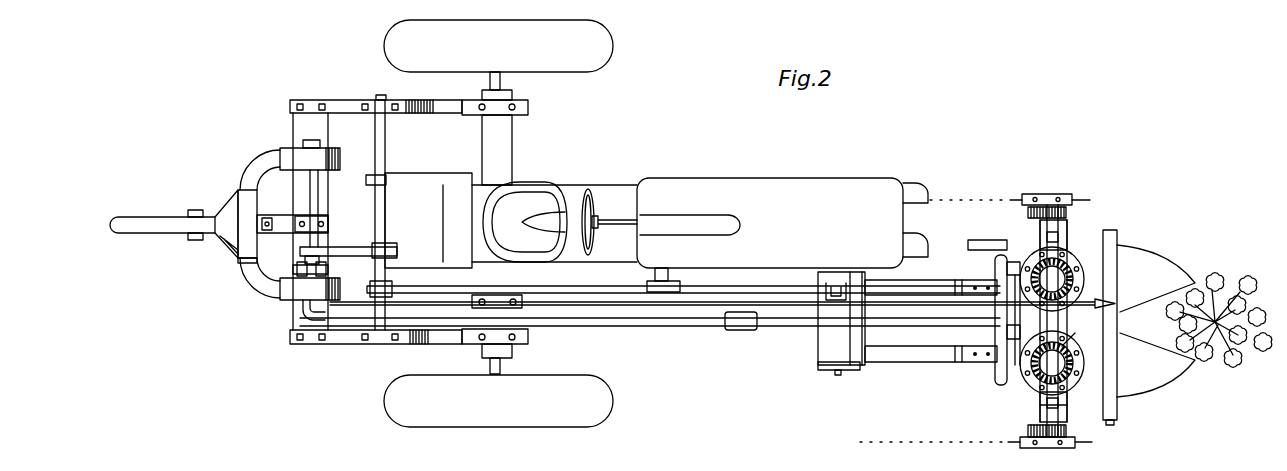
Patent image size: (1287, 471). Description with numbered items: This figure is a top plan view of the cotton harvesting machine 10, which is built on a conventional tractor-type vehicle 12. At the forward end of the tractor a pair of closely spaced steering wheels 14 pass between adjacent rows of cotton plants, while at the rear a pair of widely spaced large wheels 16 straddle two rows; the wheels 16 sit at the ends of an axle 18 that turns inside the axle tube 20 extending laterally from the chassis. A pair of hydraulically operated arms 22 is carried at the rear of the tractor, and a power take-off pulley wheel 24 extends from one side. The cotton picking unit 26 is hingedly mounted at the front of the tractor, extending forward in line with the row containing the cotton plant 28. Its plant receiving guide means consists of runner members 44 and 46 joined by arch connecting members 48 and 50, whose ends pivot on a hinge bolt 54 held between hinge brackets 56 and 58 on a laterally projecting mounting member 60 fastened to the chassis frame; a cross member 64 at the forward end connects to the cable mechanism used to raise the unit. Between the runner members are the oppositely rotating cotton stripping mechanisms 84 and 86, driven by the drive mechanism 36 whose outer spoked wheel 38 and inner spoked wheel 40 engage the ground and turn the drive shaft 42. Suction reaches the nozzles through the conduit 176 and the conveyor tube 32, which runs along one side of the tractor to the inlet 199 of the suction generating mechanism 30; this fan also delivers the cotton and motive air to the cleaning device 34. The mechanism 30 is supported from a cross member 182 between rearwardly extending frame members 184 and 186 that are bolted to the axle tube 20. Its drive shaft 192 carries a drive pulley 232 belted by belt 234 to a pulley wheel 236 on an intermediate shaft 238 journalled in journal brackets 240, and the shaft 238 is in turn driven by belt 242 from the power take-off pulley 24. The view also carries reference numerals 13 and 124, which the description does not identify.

The cotton harvesting machine 10 is at (122, 227).
The tractor-type vehicle 12 is at (706, 178).
The section indicator 13 is at (808, 311).
The steering wheels 14 is at (920, 188).
The rear wheels 16 is at (612, 48).
The axle 18 is at (502, 82).
The axle tube 20 is at (503, 165).
The hydraulically operated arms 22 is at (427, 178).
The power take-off pulley wheel 24 is at (681, 287).
The cotton picking unit 26 is at (1162, 308).
The cotton plant 28 is at (1243, 274).
The suction generating mechanism 30 is at (292, 285).
The conveyor tube 32 is at (718, 330).
The cleaning device 34 is at (214, 215).
The drive mechanism 36 is at (1075, 412).
The outer spoked wheel 38 is at (1052, 448).
The inner spoked wheel 40 is at (1057, 193).
The drive shaft 42 is at (1060, 335).
The runner member 44 is at (1183, 368).
The runner member 46 is at (1132, 262).
The arch connecting member 48 is at (928, 352).
The arch connecting member 50 is at (926, 282).
The hinge bolt 54 is at (858, 330).
The hinge bracket 56 is at (838, 364).
The hinge bracket 58 is at (842, 282).
The mounting member 60 is at (822, 347).
The cross member 64 is at (1115, 295).
The cotton stripping mechanism 84 is at (1087, 385).
The cotton stripping mechanism 86 is at (1078, 250).
The mounting plate 124 is at (1000, 260).
The conduit 176 is at (1006, 333).
The cross member 182 is at (300, 125).
The frame member 184 is at (340, 340).
The frame member 186 is at (341, 103).
The drive shaft 192 is at (310, 178).
The inlet 199 is at (302, 318).
The drive pulley 232 is at (298, 250).
The belt 234 is at (352, 252).
The pulley wheel 236 is at (396, 250).
The intermediate shaft 238 is at (382, 145).
The journal bracket 240 is at (378, 300).
The belt 242 is at (595, 294).